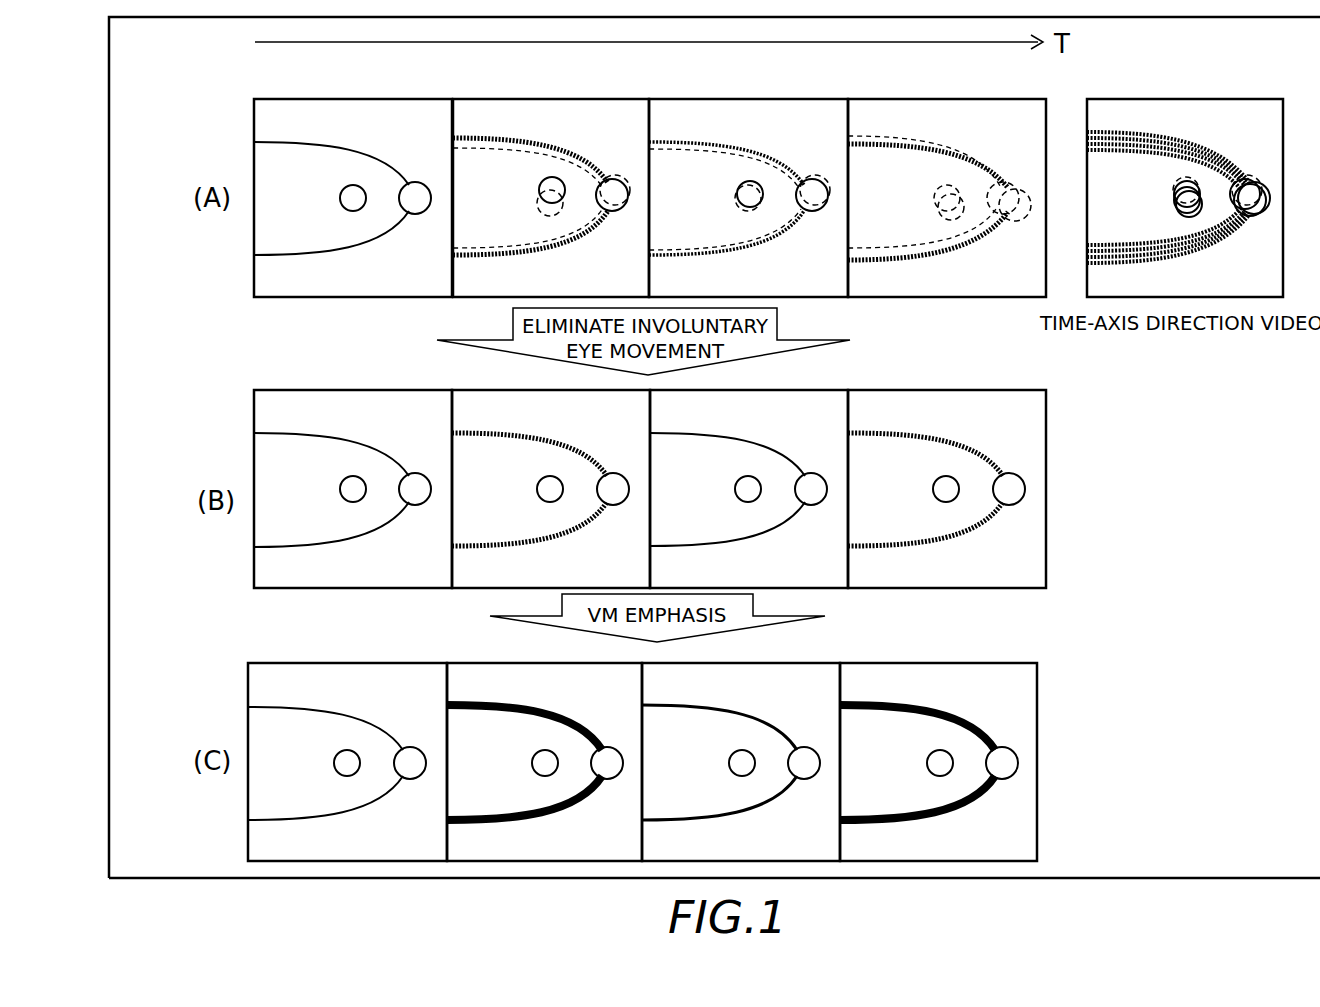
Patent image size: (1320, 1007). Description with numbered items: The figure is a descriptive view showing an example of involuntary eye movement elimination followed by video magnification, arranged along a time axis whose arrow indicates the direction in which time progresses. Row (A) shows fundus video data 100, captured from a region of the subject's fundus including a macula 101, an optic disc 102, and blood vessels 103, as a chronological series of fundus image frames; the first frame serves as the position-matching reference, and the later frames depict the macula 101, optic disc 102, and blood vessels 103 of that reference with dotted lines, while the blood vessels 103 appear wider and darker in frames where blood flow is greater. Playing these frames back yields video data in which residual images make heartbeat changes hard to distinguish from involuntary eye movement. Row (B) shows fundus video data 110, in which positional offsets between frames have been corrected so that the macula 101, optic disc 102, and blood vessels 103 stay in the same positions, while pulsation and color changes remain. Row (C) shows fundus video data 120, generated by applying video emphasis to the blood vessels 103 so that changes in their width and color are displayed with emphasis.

The fundus video data 100 is at (229, 127).
The macula 101 is at (737, 476).
The optic disc 102 is at (834, 505).
The blood vessels 103 is at (751, 466).
The fundus video data 110 is at (233, 417).
The fundus video data 120 is at (223, 688).